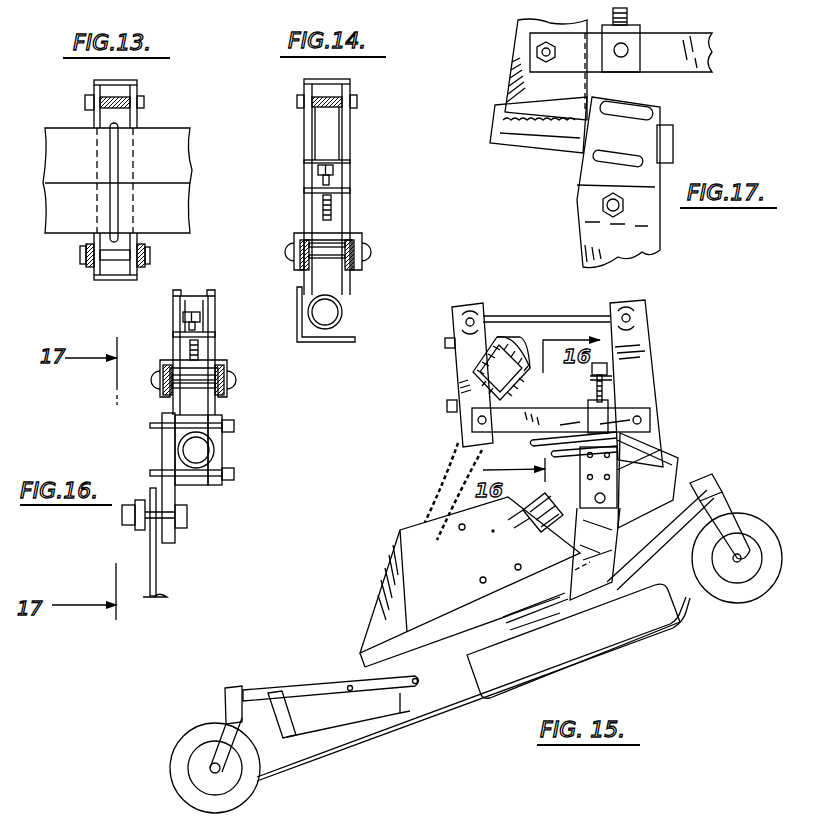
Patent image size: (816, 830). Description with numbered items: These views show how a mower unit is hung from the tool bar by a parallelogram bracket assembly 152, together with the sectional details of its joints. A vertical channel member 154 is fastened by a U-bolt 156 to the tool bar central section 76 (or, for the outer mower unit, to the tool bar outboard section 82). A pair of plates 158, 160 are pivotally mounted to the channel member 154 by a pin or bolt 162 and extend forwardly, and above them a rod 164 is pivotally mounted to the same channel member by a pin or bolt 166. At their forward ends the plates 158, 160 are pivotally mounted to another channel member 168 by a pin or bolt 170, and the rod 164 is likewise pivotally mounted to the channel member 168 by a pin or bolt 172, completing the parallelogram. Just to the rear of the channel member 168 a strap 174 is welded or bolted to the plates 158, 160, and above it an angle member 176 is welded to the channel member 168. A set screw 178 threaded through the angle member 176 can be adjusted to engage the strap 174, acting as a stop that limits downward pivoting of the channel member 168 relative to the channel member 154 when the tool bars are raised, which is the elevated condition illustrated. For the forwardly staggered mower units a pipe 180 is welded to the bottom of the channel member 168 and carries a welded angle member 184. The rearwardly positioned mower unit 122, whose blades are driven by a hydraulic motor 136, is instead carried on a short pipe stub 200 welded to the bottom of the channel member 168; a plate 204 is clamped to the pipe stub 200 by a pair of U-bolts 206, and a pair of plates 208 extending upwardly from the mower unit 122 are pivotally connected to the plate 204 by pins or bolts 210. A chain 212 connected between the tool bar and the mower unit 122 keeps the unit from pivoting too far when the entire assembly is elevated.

In FIG. 13, the tool bar central section 76 is at (182, 162).
In FIG. 15, the tool bar outboard section 82 is at (490, 363).
In FIG. 15, the mower unit 122 is at (363, 623).
In FIG. 15, the hydraulic motor 136 is at (665, 485).
In FIG. 15, the parallelogram bracket assembly 152 is at (463, 305).
In FIG. 13, the vertical channel member 154 is at (94, 115).
In FIG. 13, the U-bolt 156 is at (110, 133).
In FIG. 15, the U-bolt 156 is at (496, 337).
In FIG. 13, the plate 158 is at (149, 255).
In FIG. 14, the plate 158 is at (300, 270).
In FIG. 16, the plate 158 is at (228, 392).
In FIG. 13, the plate 160 is at (90, 275).
In FIG. 14, the plate 160 is at (357, 272).
In FIG. 17, the plate 160 is at (710, 55).
In FIG. 16, the plate 160 is at (160, 400).
In FIG. 15, the plate 160 is at (548, 410).
In FIG. 13, the pin or bolt 162 is at (82, 250).
In FIG. 13, the rod 164 is at (120, 100).
In FIG. 14, the rod 164 is at (325, 107).
In FIG. 15, the rod 164 is at (550, 316).
In FIG. 13, the pin or bolt 166 is at (88, 97).
In FIG. 14, the channel member 168 is at (352, 148).
In FIG. 17, the channel member 168 is at (512, 68).
In FIG. 16, the channel member 168 is at (173, 315).
In FIG. 15, the channel member 168 is at (644, 338).
In FIG. 14, the pin or bolt 170 is at (368, 250).
In FIG. 14, the pin or bolt 172 is at (357, 100).
In FIG. 14, the strap 174 is at (352, 236).
In FIG. 17, the strap 174 is at (660, 18).
In FIG. 16, the strap 174 is at (227, 362).
In FIG. 14, the angle member 176 is at (345, 190).
In FIG. 16, the angle member 176 is at (215, 335).
In FIG. 14, the set screw 178 is at (318, 170).
In FIG. 16, the set screw 178 is at (200, 318).
In FIG. 15, the set screw 178 is at (600, 398).
In FIG. 14, the pipe 180 is at (343, 312).
In FIG. 14, the angle member 184 is at (323, 342).
In FIG. 17, the pipe stub 200 is at (520, 140).
In FIG. 16, the pipe stub 200 is at (222, 450).
In FIG. 15, the pipe stub 200 is at (657, 460).
In FIG. 17, the plate 204 is at (660, 115).
In FIG. 16, the plate 204 is at (170, 543).
In FIG. 15, the plate 204 is at (607, 468).
In FIG. 17, the U-bolt 206 is at (650, 160).
In FIG. 16, the U-bolt 206 is at (150, 426).
In FIG. 15, the U-bolt 206 is at (610, 478).
In FIG. 17, the plate 208 is at (645, 250).
In FIG. 16, the plate 208 is at (160, 596).
In FIG. 15, the plate 208 is at (598, 560).
In FIG. 17, the pin or bolt 210 is at (605, 205).
In FIG. 16, the pin or bolt 210 is at (187, 518).
In FIG. 15, the pin or bolt 210 is at (690, 537).
In FIG. 15, the chain 212 is at (445, 460).